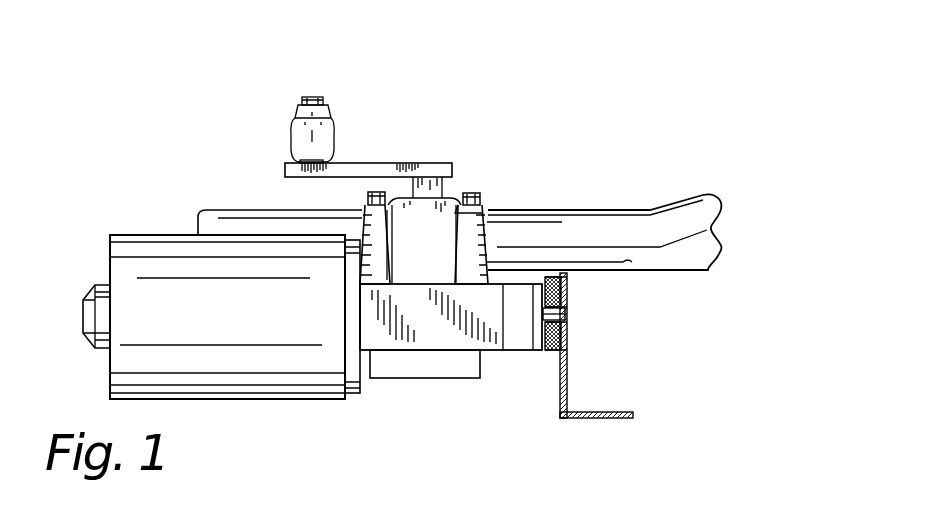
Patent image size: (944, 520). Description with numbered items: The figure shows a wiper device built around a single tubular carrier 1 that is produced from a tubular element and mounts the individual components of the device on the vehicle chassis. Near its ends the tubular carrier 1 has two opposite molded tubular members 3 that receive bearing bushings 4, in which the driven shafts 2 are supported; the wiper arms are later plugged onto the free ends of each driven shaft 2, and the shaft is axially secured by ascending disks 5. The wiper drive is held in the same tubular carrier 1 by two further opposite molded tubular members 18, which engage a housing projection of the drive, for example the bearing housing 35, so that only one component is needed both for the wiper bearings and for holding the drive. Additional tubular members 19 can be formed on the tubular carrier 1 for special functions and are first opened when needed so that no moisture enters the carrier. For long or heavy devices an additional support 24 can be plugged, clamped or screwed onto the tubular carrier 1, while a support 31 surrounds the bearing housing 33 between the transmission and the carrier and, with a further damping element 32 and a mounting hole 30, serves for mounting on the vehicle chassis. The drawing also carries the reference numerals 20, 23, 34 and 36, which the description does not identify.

The tubular carrier 1 is at (545, 228).
The driven shaft 2 is at (228, 351).
The molded tubular member 3 is at (447, 163).
The bearing bushing 4 is at (451, 343).
The ascending disk 5 is at (460, 194).
The molded tubular member 18 is at (669, 268).
The additional tubular member 19 is at (258, 378).
The housing block 20 is at (433, 337).
The nut 23 is at (377, 193).
The additional support 24 is at (373, 163).
The mounting hole 30 is at (548, 278).
The support 31 is at (567, 315).
The further damping element 32 is at (669, 383).
The bearing housing 33 is at (567, 333).
The bushing flange 34 is at (567, 343).
The bearing housing 35 is at (567, 305).
The bracket foot 36 is at (573, 418).